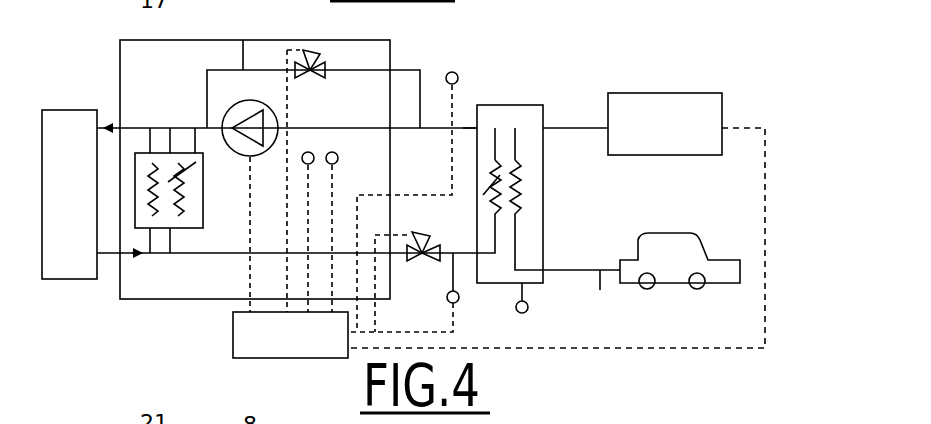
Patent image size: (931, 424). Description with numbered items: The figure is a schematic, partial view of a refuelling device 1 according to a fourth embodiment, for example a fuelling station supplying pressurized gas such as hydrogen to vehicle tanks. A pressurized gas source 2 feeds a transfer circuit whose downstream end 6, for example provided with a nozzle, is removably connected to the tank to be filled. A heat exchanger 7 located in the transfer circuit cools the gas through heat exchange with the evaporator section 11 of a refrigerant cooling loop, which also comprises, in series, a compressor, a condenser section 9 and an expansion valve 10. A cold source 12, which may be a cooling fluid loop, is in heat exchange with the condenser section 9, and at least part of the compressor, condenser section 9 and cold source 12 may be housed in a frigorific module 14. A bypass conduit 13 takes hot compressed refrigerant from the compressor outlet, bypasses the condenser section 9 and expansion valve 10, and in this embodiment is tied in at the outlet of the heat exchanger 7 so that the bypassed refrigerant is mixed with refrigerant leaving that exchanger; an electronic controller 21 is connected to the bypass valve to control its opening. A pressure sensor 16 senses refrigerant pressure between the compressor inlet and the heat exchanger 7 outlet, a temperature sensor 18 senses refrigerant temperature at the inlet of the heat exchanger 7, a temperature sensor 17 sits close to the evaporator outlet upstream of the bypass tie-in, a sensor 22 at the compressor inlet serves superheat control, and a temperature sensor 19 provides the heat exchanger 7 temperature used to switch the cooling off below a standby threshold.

The refuelling device 1 is at (136, 306).
The pressurized gas source 2 is at (702, 93).
The downstream end 6 is at (600, 290).
The heat exchanger 7 is at (513, 105).
The condenser section 9 is at (195, 128).
The expansion valve 10 is at (424, 266).
The evaporator section 11 is at (469, 152).
The cold source 12 is at (78, 279).
The bypass conduit 13 is at (243, 40).
The frigorific module 14 is at (120, 78).
The pressure sensor 16 is at (312, 151).
The temperature sensor 17 is at (449, 72).
The temperature sensor 18 is at (460, 302).
The temperature sensor 19 is at (527, 312).
The electronic controller 21 is at (233, 345).
The superheat control sensor 22 is at (336, 152).